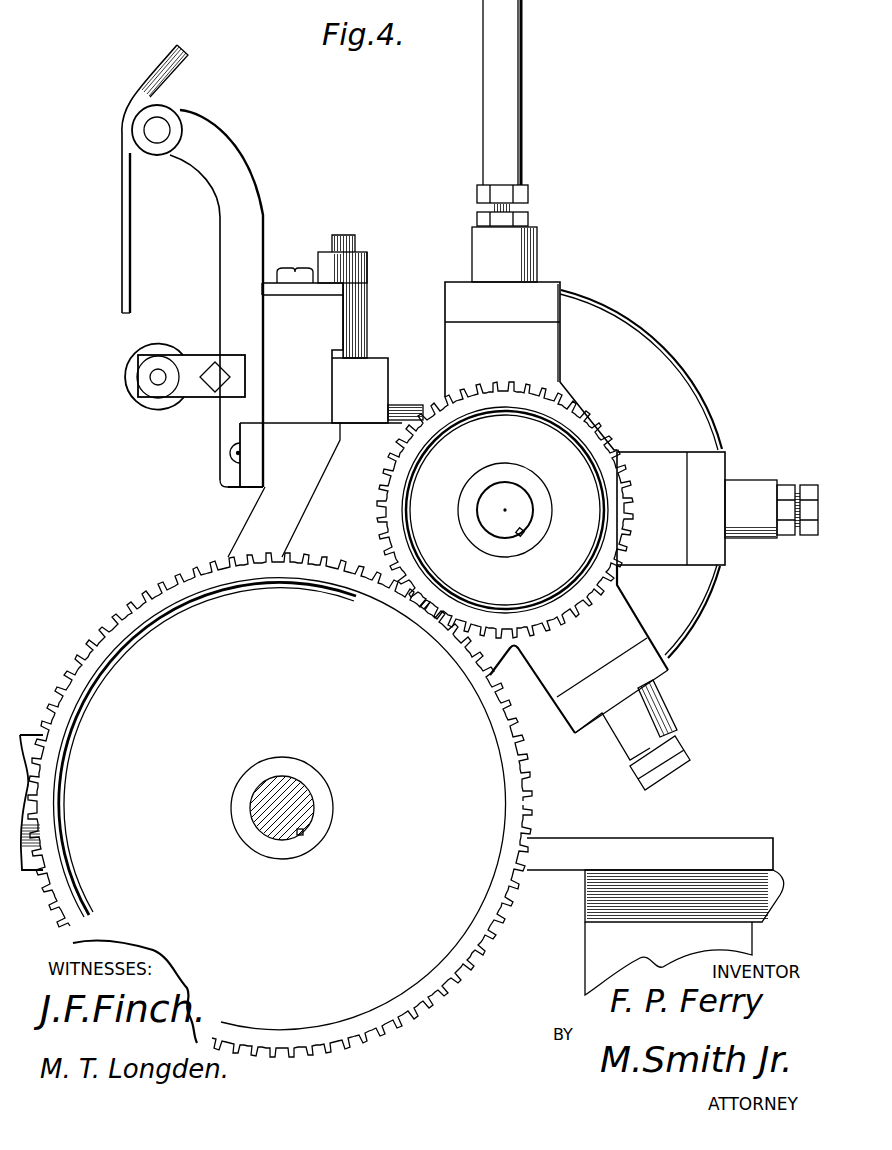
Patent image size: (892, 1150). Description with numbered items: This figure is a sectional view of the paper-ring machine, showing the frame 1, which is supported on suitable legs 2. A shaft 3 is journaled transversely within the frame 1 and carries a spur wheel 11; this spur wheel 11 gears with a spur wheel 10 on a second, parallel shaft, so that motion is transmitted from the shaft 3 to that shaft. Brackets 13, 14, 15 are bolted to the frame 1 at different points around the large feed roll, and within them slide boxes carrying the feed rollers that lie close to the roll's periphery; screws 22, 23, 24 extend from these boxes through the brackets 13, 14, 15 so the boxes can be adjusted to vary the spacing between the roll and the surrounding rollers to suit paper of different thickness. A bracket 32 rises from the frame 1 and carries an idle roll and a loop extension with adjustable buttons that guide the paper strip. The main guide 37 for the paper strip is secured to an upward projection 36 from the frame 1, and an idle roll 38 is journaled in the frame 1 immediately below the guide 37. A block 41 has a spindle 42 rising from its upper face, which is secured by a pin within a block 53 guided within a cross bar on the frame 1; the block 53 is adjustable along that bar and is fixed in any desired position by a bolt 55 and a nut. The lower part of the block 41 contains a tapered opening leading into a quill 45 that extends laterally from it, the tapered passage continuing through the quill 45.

The frame 1 is at (268, 508).
The legs 2 is at (600, 940).
The shaft 3 is at (312, 797).
The spur wheel 10 is at (605, 457).
The spur wheel 11 is at (522, 833).
The bracket 13 is at (655, 670).
The bracket 14 is at (722, 470).
The bracket 15 is at (540, 300).
The screw 22 is at (682, 757).
The screw 23 is at (805, 486).
The screw 24 is at (528, 208).
The bracket 32 is at (505, 123).
The upward projection 36 is at (238, 230).
The main guide 37 is at (124, 182).
The idle roll 38 is at (127, 378).
The block 41 is at (372, 367).
The spindle 42 is at (350, 246).
The quill 45 is at (405, 406).
The block 53 is at (367, 270).
The bolt 55 is at (290, 266).